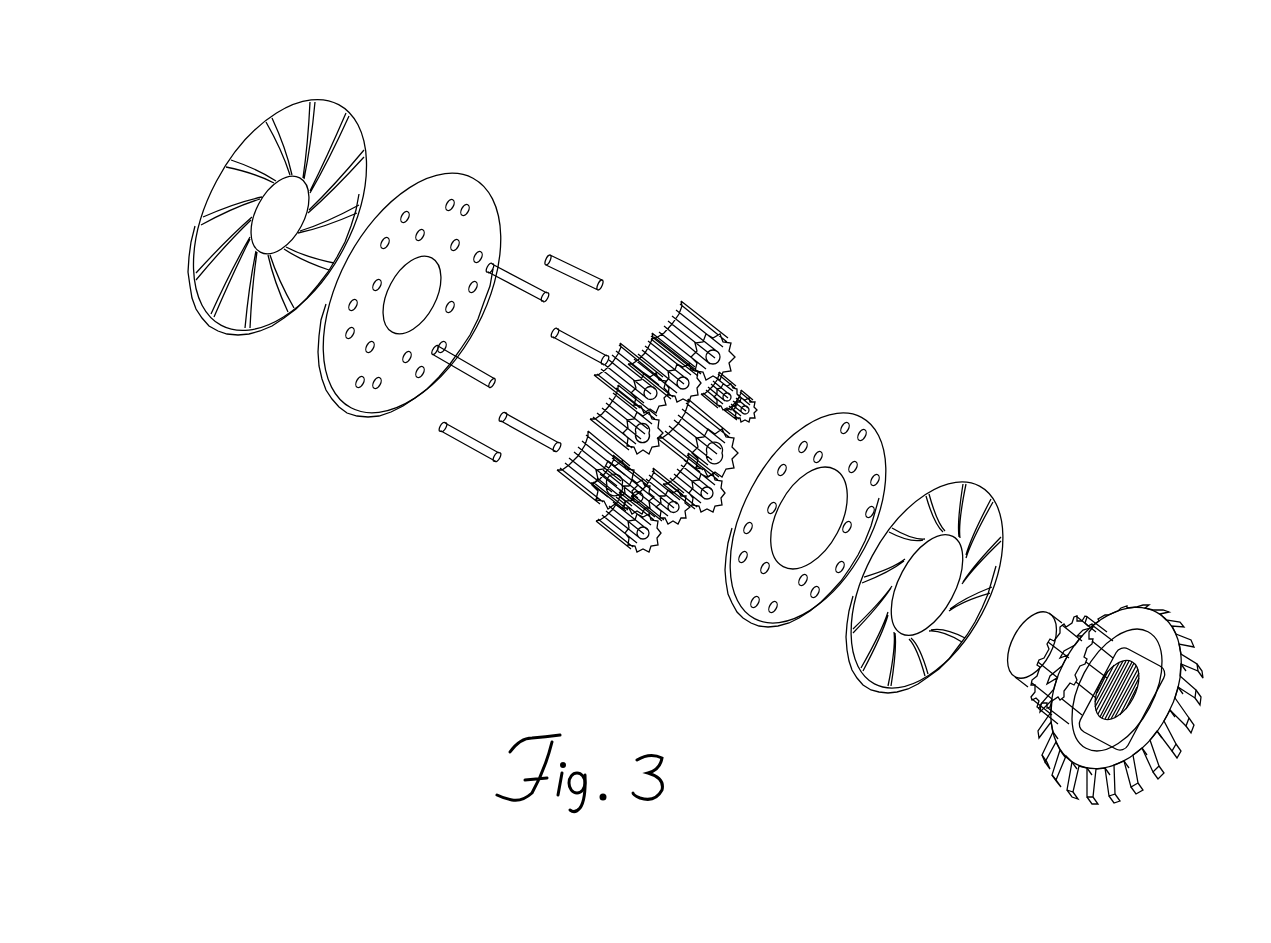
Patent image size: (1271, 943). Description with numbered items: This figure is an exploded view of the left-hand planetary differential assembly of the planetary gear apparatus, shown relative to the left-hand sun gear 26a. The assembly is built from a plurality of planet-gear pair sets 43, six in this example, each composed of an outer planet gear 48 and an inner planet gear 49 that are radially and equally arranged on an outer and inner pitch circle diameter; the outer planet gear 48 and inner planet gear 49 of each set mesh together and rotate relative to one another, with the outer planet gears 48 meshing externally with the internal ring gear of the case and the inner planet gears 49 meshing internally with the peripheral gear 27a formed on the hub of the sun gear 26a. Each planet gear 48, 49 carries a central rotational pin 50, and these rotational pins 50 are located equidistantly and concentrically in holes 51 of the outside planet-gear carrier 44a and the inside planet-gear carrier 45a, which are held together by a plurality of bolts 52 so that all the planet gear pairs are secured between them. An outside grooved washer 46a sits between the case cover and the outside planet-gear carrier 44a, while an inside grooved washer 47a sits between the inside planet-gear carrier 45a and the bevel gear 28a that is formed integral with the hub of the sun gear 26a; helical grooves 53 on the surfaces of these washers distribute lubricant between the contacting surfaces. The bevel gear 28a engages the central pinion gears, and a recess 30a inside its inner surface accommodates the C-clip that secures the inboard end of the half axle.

The sun gear 26a is at (1146, 633).
The peripheral gear 27a is at (1065, 620).
The bevel gear 28a is at (1155, 595).
The recess 30a is at (1113, 720).
The planet-gear pair set 43 is at (649, 418).
The outside planet-gear carrier 44a is at (330, 385).
The inside planet-gear carrier 45a is at (733, 593).
The outside grooved washer 46a is at (213, 247).
The inside grooved washer 47a is at (983, 527).
The outer planet gear 48 is at (692, 325).
The inner planet gear 49 is at (665, 348).
The rotational pin 50 is at (728, 368).
The holes 51 is at (408, 212).
The bolts 52 is at (572, 265).
The helical grooves 53 is at (284, 112).